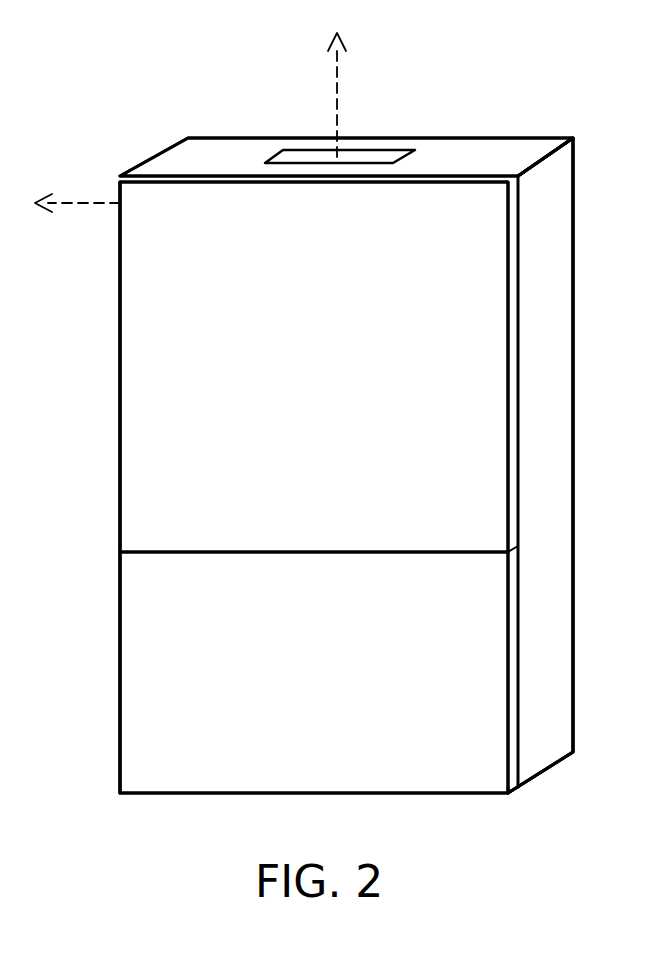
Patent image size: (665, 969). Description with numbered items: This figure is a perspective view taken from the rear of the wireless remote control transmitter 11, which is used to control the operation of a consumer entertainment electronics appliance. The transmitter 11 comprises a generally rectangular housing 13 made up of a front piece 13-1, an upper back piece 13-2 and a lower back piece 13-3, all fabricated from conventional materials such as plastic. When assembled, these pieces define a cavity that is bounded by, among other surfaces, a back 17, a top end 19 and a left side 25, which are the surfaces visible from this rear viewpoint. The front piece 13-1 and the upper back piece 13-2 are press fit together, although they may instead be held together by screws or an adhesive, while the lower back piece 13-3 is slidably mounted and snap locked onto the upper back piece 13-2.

The wireless remote control transmitter 11 is at (260, 812).
The housing 13 is at (580, 385).
The front piece 13-1 is at (552, 188).
The upper back piece 13-2 is at (480, 298).
The lower back piece 13-3 is at (470, 623).
The back 17 is at (120, 505).
The top end 19 is at (458, 157).
The left side 25 is at (555, 530).